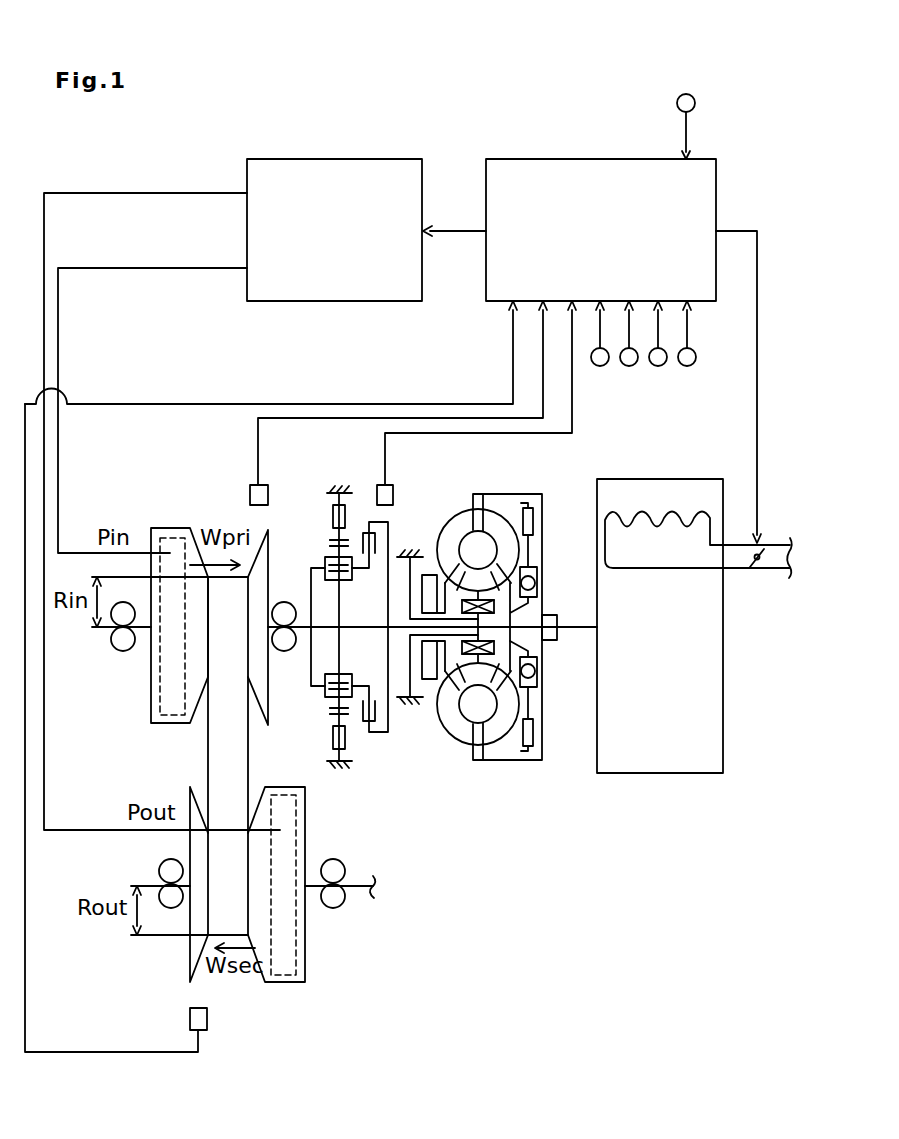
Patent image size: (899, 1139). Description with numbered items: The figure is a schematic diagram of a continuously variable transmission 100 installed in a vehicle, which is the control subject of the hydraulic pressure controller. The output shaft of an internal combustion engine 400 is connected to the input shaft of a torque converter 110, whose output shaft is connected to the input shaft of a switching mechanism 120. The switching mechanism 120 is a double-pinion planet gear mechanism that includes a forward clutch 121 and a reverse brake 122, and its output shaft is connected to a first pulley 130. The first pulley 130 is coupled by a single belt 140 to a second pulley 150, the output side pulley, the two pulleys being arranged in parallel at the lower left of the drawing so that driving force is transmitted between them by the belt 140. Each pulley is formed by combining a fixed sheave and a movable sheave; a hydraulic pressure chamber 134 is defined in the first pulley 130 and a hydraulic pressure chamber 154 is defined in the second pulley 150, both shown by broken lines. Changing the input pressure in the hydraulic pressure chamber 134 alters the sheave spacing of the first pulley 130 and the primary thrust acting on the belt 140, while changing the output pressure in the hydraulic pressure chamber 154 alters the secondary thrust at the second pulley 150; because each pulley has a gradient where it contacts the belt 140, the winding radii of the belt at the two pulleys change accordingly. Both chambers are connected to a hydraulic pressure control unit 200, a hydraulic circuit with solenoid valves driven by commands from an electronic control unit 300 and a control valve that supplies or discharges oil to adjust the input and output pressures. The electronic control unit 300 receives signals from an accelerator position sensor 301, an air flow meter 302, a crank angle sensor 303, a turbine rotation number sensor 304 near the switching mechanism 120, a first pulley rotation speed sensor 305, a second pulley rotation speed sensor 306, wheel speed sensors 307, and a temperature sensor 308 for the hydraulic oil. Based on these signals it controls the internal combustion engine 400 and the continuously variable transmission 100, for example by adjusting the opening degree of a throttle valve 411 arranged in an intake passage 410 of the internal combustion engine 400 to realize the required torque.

The continuously variable transmission 100 is at (425, 823).
The torque converter 110 is at (515, 494).
The switching mechanism 120 is at (349, 628).
The forward clutch 121 is at (358, 717).
The reverse brake 122 is at (333, 733).
The first pulley 130 is at (343, 601).
The hydraulic pressure chamber 134 is at (170, 687).
The belt 140 is at (208, 758).
The second pulley 150 is at (263, 910).
The hydraulic pressure chamber 154 is at (290, 850).
The hydraulic pressure control unit 200 is at (283, 159).
The electronic control unit 300 is at (553, 159).
The accelerator position sensor 301 is at (600, 366).
The air flow meter 302 is at (629, 366).
The crank angle sensor 303 is at (658, 366).
The turbine rotation number sensor 304 is at (393, 490).
The first pulley rotation speed sensor 305 is at (268, 490).
The second pulley rotation speed sensor 306 is at (190, 1018).
The wheel speed sensors 307 is at (687, 366).
The temperature sensor 308 is at (695, 103).
The internal combustion engine 400 is at (694, 601).
The intake passage 410 is at (772, 568).
The throttle valve 411 is at (745, 565).